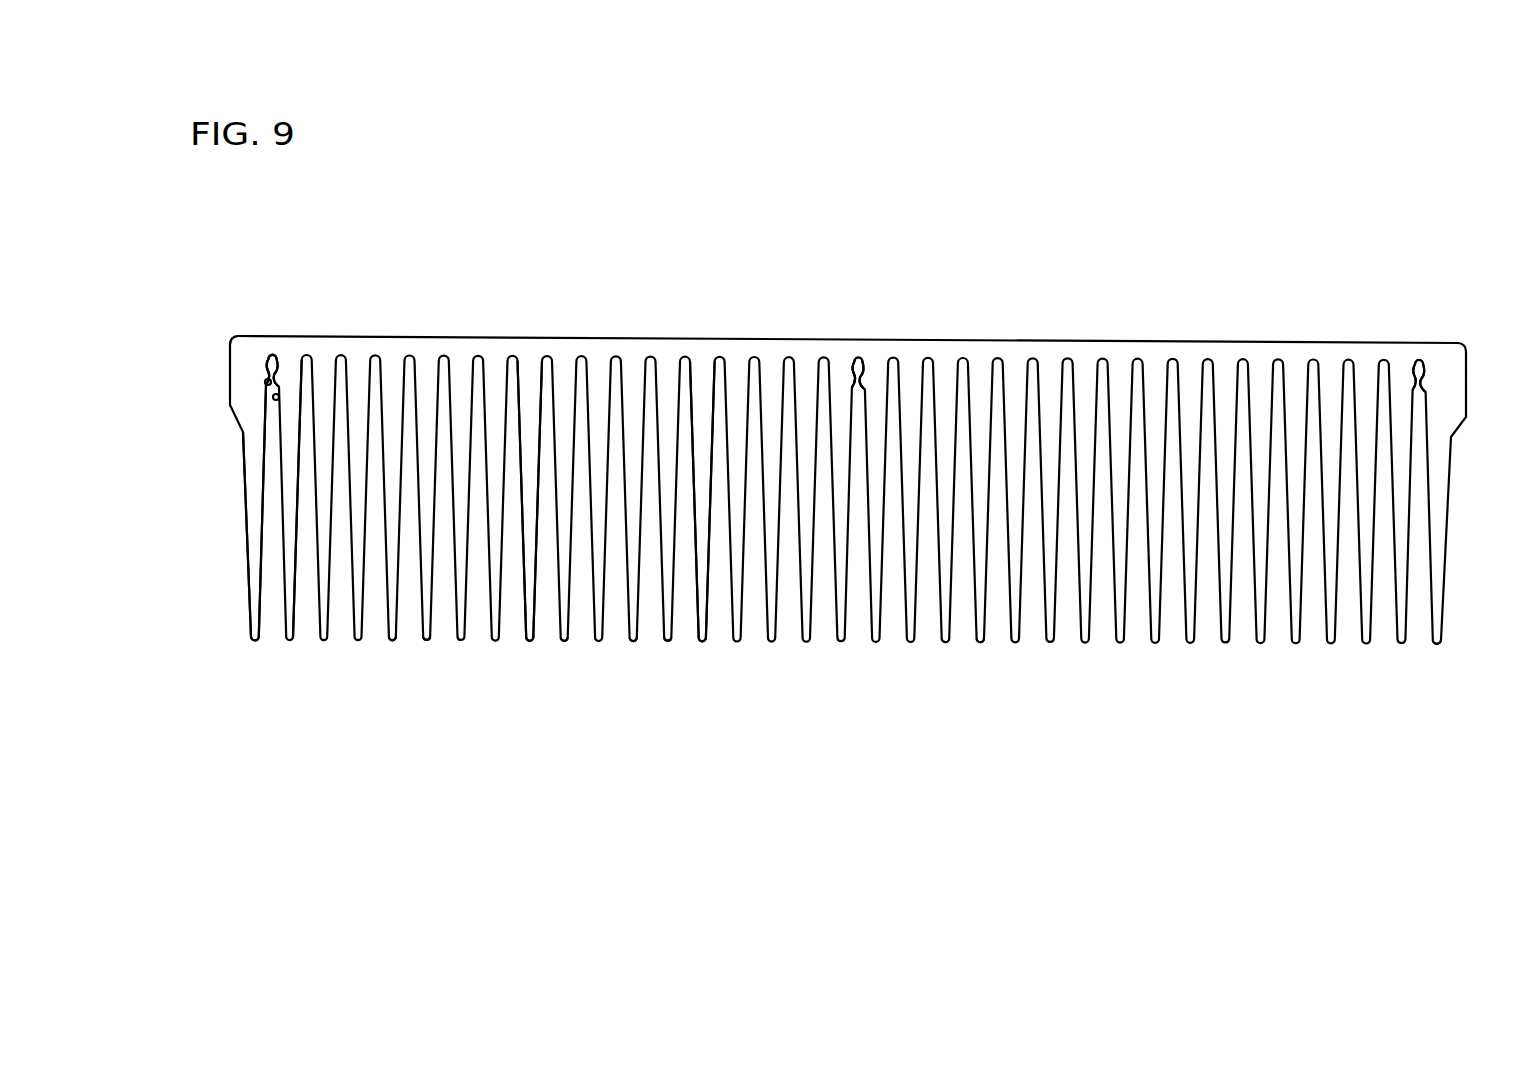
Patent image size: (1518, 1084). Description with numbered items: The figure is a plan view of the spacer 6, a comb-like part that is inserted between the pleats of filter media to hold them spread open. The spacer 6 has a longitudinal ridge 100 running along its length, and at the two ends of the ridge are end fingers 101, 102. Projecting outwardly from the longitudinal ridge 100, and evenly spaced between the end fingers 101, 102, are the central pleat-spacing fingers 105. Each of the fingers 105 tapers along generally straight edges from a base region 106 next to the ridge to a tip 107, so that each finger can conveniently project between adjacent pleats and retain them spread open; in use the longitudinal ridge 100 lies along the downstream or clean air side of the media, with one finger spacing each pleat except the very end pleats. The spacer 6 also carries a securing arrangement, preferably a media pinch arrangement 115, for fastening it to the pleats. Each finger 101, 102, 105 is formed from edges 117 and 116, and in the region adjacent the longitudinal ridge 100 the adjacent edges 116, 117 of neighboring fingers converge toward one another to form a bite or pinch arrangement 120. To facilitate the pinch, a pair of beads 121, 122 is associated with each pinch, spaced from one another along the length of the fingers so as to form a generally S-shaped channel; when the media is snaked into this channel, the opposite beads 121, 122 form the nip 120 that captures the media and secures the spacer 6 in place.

The spacer 6 is at (858, 278).
The longitudinal ridge 100 is at (915, 348).
The end finger 101 is at (253, 633).
The end finger 102 is at (1434, 645).
The central pleat-spacing fingers 105 is at (980, 642).
The base region 106 is at (700, 363).
The tip 107 is at (703, 642).
The media pinch arrangement 115 is at (1436, 335).
The edge 116 is at (294, 570).
The edge 117 is at (278, 395).
The bite or pinch arrangement 120 is at (855, 357).
The bead 121 is at (266, 380).
The bead 122 is at (277, 357).